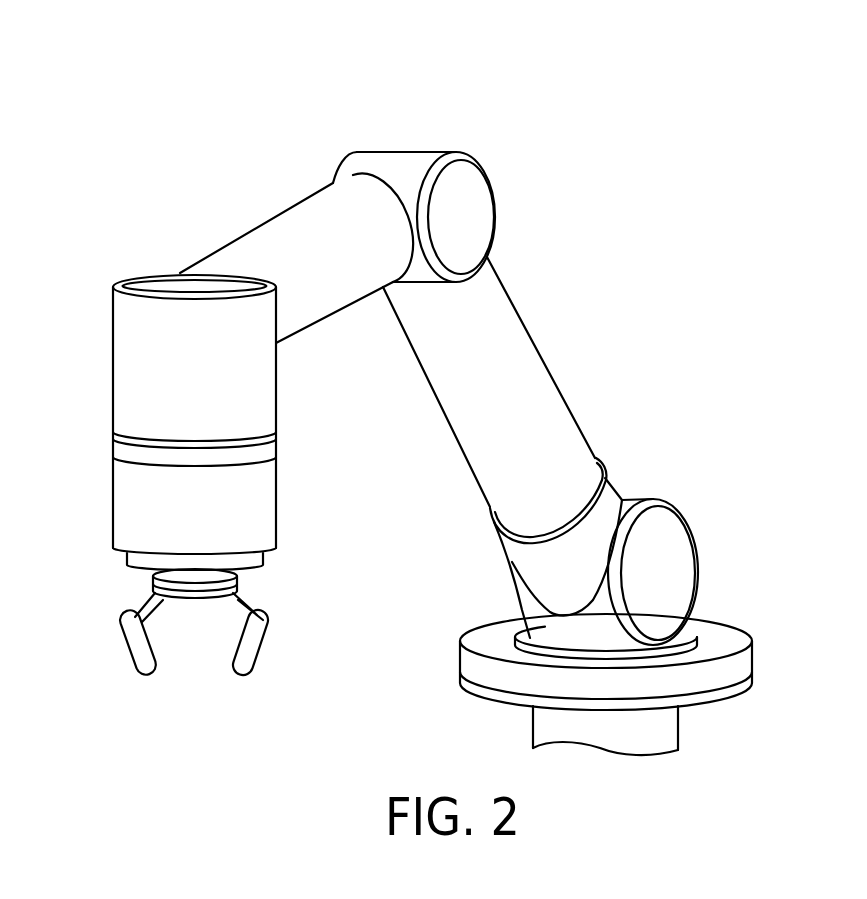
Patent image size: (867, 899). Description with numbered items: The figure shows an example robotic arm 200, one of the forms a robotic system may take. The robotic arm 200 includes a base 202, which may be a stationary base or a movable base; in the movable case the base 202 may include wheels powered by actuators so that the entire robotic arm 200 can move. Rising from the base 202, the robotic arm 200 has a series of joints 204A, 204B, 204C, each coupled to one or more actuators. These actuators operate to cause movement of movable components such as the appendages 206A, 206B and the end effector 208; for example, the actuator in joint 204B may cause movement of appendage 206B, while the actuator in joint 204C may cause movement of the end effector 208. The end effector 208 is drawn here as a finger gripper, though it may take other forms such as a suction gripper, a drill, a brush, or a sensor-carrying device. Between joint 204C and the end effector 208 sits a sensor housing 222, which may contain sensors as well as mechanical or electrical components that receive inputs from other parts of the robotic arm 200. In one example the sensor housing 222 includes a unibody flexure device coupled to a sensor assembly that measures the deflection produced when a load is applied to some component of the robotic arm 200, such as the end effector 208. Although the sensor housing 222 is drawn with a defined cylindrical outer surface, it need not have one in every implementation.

The robotic arm 200 is at (124, 90).
The base 202 is at (722, 637).
The joint 204A is at (660, 553).
The joint 204B is at (463, 205).
The joint 204C is at (142, 373).
The appendage 206A is at (527, 385).
The appendage 206B is at (283, 237).
The end effector 208 is at (258, 637).
The sensor housing 222 is at (132, 523).